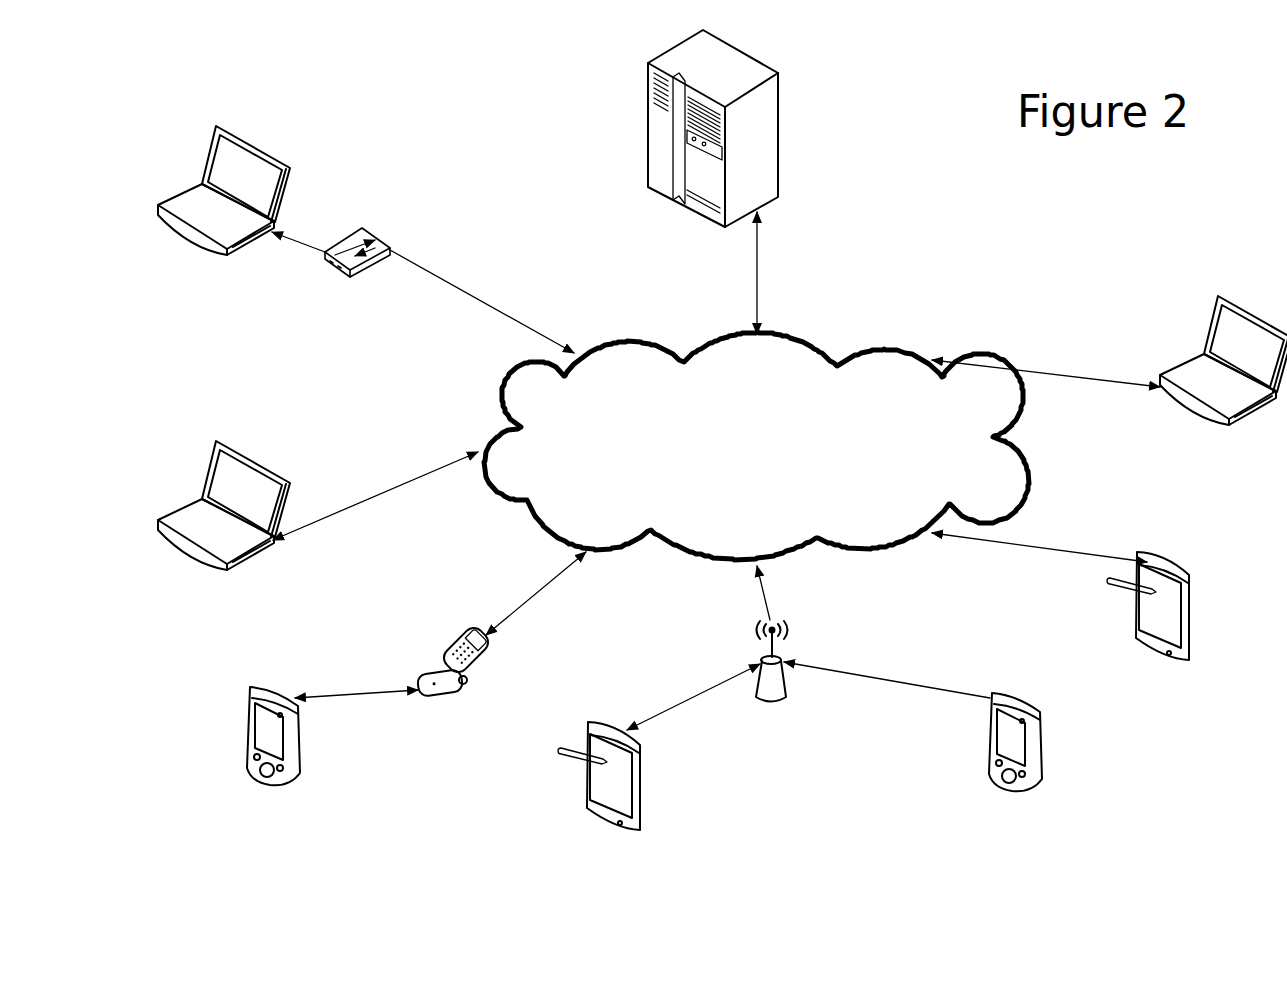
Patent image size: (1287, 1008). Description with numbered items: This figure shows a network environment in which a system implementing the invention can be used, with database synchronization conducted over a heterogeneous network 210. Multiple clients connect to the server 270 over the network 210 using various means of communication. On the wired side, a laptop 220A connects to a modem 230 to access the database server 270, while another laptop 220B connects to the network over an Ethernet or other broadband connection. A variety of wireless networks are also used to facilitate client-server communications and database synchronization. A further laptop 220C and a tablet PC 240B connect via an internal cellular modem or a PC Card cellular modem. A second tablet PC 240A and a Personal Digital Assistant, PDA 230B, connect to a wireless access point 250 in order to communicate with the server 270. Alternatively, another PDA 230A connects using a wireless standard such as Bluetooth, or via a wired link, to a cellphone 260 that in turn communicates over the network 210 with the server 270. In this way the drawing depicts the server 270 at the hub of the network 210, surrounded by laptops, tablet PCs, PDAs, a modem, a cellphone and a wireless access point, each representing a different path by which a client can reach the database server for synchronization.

The heterogeneous network 210 is at (756, 446).
The laptop 220A is at (224, 202).
The laptop 220B is at (224, 517).
The laptop 220C is at (1223, 371).
The modem 230 is at (357, 267).
The PDA 230A is at (273, 751).
The PDA 230B is at (1015, 757).
The tablet PC 240A is at (599, 794).
The tablet PC 240B is at (1148, 624).
The wireless access point 250 is at (771, 677).
The cellphone 260 is at (454, 676).
The server 270 is at (713, 146).